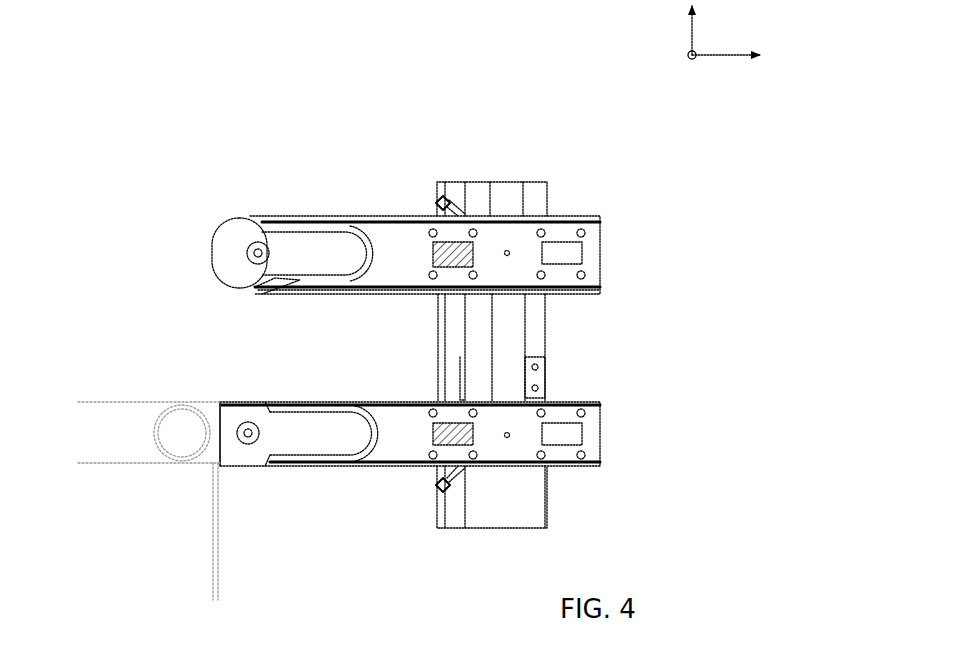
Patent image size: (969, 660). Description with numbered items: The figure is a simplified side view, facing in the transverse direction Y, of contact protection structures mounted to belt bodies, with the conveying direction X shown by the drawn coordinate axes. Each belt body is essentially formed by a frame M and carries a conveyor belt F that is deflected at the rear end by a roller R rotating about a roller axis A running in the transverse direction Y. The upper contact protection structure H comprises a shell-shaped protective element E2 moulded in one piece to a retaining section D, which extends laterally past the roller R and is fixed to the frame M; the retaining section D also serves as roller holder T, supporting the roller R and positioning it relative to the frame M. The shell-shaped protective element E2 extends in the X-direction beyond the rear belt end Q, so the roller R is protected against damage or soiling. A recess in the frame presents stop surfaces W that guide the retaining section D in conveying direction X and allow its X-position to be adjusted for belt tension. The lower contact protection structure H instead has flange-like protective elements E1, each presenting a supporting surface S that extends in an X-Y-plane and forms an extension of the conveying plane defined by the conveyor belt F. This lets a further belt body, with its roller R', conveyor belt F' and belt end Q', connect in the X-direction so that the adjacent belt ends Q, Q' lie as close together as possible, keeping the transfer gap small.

The conveyor belt F is at (425, 193).
The conveyor belt of the further belt body F' is at (136, 389).
The frame M is at (512, 220).
The roller R is at (299, 200).
The roller of the further belt body R' is at (151, 455).
The shell-shaped protective element E2 is at (222, 220).
The flange-like protective element E1 is at (222, 464).
The roller axis A is at (258, 255).
The retaining section D is at (332, 250).
The contact protection structure H is at (300, 228).
The roller holder T is at (258, 465).
The supporting surface S is at (220, 400).
The stop surfaces W is at (323, 410).
The rear belt end Q is at (234, 534).
The belt end of the further belt body Q' is at (188, 534).
The conveying direction X is at (739, 67).
The transverse direction Y is at (674, 53).